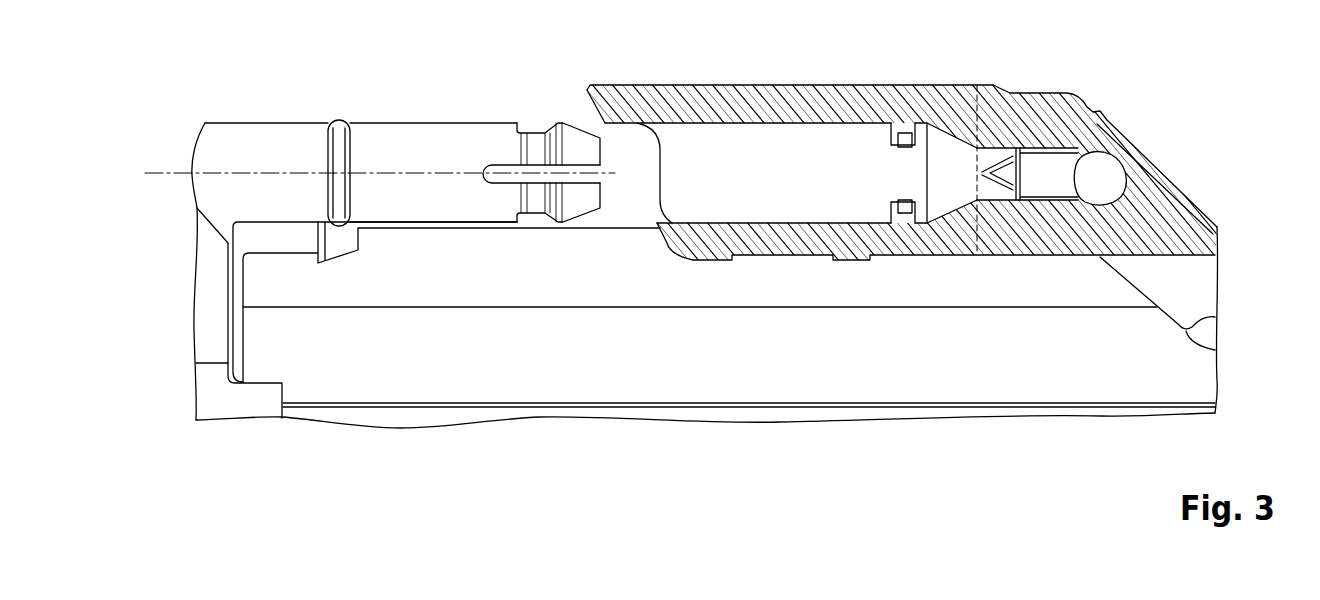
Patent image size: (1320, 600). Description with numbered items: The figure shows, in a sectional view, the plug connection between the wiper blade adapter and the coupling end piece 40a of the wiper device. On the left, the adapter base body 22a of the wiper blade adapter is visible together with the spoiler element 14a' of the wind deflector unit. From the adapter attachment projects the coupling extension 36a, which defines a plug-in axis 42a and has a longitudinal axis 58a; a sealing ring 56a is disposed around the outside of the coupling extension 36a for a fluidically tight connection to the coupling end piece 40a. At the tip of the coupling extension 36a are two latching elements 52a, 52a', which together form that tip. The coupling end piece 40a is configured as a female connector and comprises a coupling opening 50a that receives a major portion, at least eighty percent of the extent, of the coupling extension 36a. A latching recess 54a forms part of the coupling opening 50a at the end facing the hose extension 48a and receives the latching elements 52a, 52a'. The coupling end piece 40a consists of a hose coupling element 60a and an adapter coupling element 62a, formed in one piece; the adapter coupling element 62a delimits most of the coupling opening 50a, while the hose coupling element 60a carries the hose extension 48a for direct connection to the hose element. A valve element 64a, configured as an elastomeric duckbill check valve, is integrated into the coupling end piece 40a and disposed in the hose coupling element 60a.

The spoiler element 14a' is at (729, 368).
The adapter base body 22a is at (240, 418).
The coupling extension 36a is at (446, 140).
The coupling end piece 40a is at (850, 140).
The plug-in axis 42a is at (351, 222).
The hose extension 48a is at (1200, 292).
The coupling opening 50a is at (718, 143).
The latching element 52a is at (550, 122).
The latching element 52a' is at (558, 142).
The latching recess 54a is at (951, 148).
The sealing ring 56a is at (335, 137).
The longitudinal axis of the coupling extension 58a is at (243, 140).
The hose coupling element 60a is at (1157, 200).
The adapter coupling element 62a is at (852, 103).
The valve element 64a is at (1053, 147).